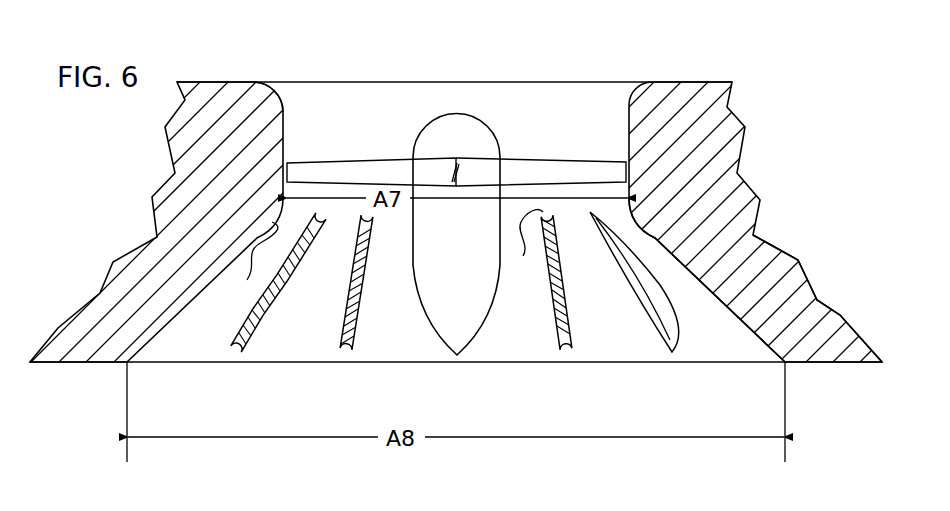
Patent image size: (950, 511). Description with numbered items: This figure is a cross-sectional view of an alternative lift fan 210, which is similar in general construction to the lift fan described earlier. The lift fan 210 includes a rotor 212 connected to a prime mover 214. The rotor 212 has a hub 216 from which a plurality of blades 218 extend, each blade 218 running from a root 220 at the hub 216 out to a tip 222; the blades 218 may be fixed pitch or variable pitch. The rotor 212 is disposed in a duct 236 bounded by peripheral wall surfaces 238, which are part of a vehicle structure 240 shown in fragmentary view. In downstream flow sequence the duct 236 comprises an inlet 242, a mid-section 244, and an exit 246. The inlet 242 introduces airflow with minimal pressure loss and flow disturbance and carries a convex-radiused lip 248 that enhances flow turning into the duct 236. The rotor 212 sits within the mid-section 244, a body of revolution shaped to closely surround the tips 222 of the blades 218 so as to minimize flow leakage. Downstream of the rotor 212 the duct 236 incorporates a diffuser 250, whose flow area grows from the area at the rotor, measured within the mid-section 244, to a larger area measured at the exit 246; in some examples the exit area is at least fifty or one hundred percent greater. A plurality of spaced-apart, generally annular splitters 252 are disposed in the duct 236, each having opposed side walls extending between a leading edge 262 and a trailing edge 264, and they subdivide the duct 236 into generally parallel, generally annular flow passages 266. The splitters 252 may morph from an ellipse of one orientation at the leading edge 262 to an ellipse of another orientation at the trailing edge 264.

The lift fan 210 is at (608, 60).
The rotor 212 is at (466, 230).
The prime mover 214 is at (457, 120).
The hub 216 is at (491, 167).
The blade 218 is at (595, 162).
The root 220 is at (412, 172).
The tip 222 is at (287, 168).
The duct 236 is at (246, 243).
The peripheral wall surfaces 238 is at (728, 307).
The vehicle structure 240 is at (712, 85).
The inlet 242 is at (320, 82).
The mid-section 244 is at (246, 264).
The exit 246 is at (172, 364).
The convex-radiused lip 248 is at (248, 90).
The diffuser 250 is at (683, 259).
The splitter 252 is at (558, 277).
The leading edge 262 is at (523, 246).
The trailing edge 264 is at (565, 357).
The flow passage 266 is at (521, 327).